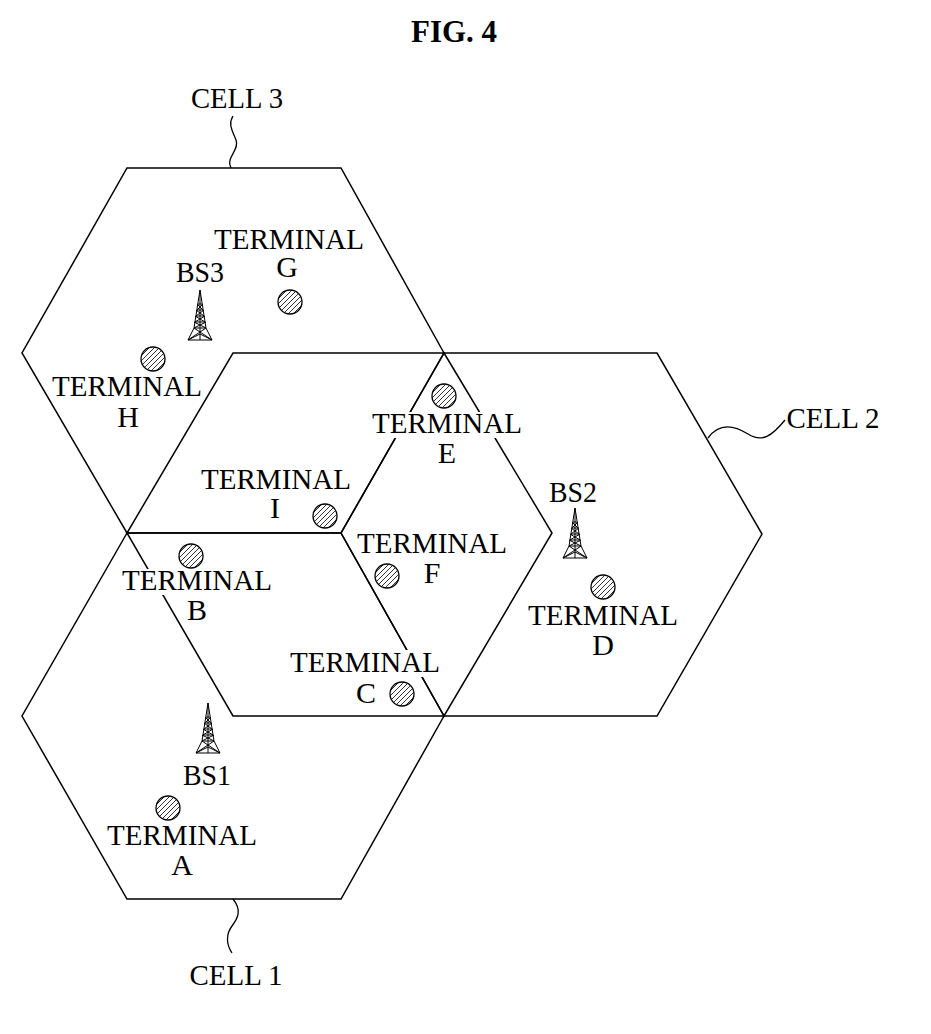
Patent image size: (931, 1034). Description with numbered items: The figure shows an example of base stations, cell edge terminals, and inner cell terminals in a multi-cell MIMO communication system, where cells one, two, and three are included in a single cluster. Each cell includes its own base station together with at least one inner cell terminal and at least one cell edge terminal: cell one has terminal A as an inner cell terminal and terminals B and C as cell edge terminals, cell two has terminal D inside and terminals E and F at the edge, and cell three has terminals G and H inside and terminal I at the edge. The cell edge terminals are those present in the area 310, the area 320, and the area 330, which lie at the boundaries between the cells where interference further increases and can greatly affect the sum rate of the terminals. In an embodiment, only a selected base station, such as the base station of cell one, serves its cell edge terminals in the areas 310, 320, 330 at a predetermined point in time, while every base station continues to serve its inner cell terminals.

The area 310 is at (285, 443).
The area 320 is at (285, 624).
The area 330 is at (446, 534).